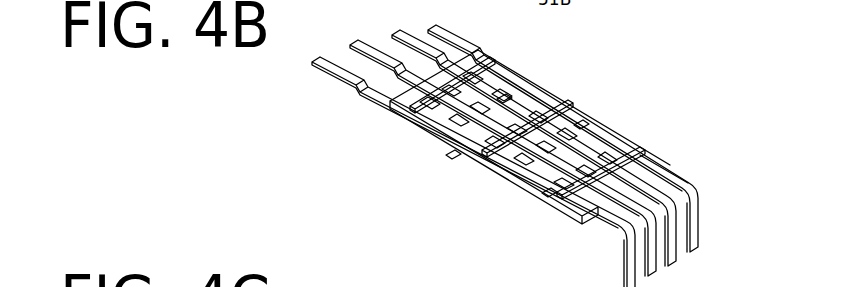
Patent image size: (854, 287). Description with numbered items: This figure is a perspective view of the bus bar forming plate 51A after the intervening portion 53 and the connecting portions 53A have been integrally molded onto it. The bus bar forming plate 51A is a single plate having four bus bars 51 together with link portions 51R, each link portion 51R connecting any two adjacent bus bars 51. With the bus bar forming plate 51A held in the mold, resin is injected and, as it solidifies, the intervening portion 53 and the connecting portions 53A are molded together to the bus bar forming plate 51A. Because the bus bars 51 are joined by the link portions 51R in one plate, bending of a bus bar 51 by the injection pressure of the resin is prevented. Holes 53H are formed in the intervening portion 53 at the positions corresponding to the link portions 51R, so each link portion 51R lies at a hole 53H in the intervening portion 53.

The bus bar 51 is at (640, 284).
The bus bar forming plate 51A is at (673, 173).
The link portion 51R is at (503, 94).
The intervening portion 53 is at (407, 128).
The connecting portion 53A is at (488, 56).
The hole 53H is at (437, 135).